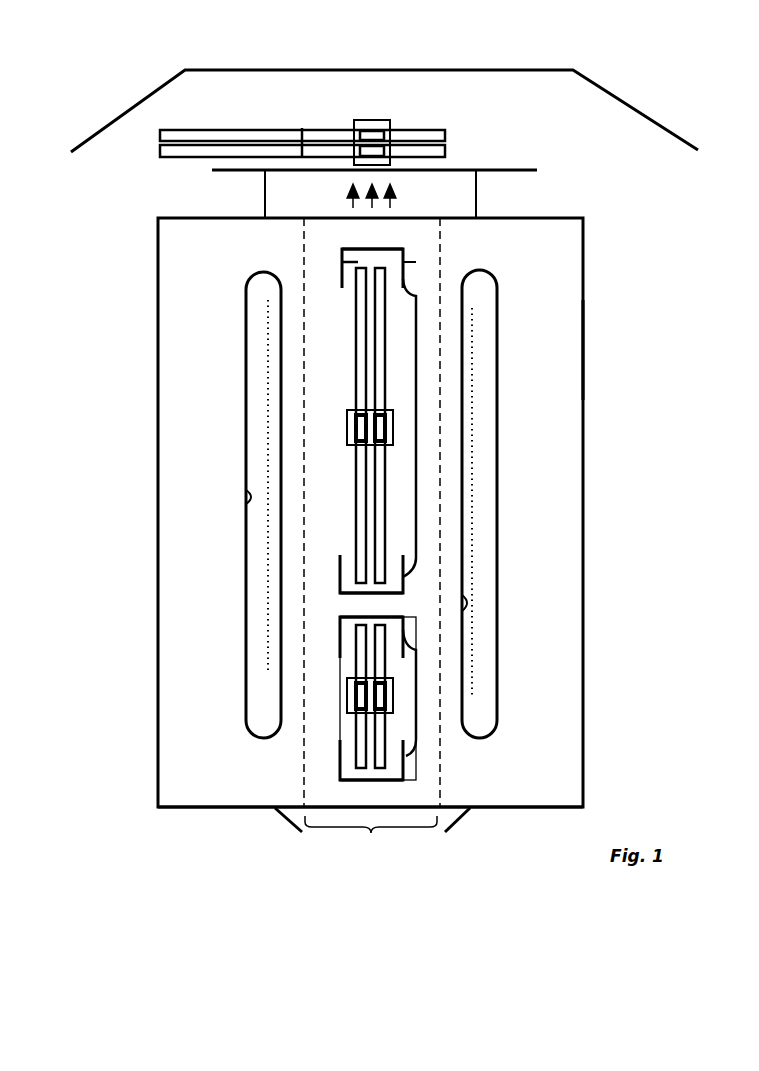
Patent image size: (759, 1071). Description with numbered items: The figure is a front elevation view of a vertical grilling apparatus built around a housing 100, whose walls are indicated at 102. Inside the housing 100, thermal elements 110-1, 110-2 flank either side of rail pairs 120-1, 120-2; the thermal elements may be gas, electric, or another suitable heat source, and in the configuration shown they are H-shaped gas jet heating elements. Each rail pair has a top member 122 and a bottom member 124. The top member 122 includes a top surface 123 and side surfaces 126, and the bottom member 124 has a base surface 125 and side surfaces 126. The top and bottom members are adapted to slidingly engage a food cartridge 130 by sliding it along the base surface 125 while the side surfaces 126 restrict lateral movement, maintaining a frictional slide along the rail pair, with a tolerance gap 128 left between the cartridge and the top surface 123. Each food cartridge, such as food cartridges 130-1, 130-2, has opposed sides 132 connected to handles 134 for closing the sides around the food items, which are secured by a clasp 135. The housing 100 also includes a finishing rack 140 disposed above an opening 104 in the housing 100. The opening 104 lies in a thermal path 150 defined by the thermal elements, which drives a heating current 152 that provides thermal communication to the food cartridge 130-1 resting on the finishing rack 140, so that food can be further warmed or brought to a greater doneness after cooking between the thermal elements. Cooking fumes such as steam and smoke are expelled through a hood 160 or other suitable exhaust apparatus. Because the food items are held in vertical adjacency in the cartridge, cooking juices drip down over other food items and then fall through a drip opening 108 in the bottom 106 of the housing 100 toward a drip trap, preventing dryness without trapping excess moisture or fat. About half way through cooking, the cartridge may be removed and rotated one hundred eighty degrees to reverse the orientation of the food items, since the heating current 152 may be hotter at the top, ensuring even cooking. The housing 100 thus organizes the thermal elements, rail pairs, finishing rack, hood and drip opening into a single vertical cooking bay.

The housing 100 is at (583, 365).
The housing 102 is at (545, 218).
The opening 104 is at (392, 228).
The bottom 106 is at (262, 808).
The drip opening 108 is at (412, 788).
The thermal element 110-1 is at (498, 392).
The thermal element 110-2 is at (246, 497).
The rail pair 120-1 is at (373, 501).
The rail pair 120-2 is at (418, 690).
The top member 122 is at (342, 255).
The top surface 123 is at (357, 248).
The bottom member 124 is at (343, 597).
The base surface 125 is at (390, 598).
The side surfaces 126 is at (416, 262).
The tolerance gap 128 is at (342, 262).
The food cartridge 130 is at (325, 492).
The food cartridge 130-1 is at (445, 128).
The food cartridge 130-2 is at (325, 728).
The opposed sides 132 is at (355, 345).
The handles 134 is at (347, 415).
The clasp 135 is at (347, 425).
The finishing rack 140 is at (236, 172).
The thermal path 150 is at (371, 833).
The heating current 152 is at (400, 197).
The hood 160 is at (625, 100).